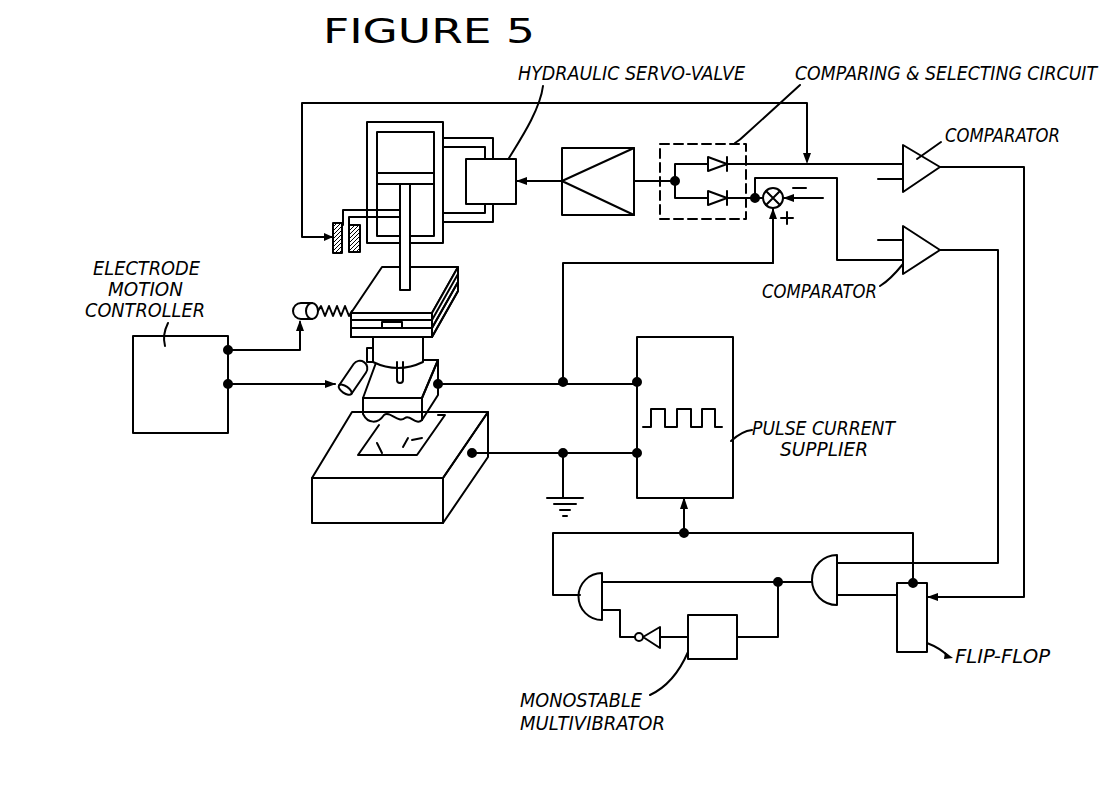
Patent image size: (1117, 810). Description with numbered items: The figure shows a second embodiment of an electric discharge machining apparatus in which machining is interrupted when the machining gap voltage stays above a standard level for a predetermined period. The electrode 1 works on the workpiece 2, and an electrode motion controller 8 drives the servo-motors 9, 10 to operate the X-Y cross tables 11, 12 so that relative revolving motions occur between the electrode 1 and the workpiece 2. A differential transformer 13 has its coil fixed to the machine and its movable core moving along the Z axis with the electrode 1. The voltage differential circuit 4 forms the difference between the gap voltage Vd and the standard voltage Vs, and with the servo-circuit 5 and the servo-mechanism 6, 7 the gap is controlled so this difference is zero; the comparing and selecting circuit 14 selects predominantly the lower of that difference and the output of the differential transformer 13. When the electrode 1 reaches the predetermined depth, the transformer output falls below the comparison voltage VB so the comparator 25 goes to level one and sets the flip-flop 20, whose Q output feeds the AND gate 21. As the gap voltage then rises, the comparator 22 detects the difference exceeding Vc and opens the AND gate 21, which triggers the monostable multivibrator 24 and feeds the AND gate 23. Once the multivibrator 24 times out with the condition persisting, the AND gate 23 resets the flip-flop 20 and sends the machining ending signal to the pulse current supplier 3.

The electrode 1 is at (441, 375).
The workpiece 2 is at (477, 440).
The pulse current supplier 3 is at (715, 378).
The voltage differential circuit 4 is at (762, 208).
The machining gap servo-circuit 5 is at (590, 157).
The machining gap servo-mechanism 6 is at (502, 158).
The machining gap servo-mechanism 7 is at (402, 148).
The electrode motion controller 8 is at (175, 411).
The servo-motor 9 is at (302, 303).
The servo-motor 10 is at (338, 398).
The X-Y cross table 11 is at (462, 282).
The X-Y cross table 12 is at (458, 303).
The differential transformer 13 is at (333, 224).
The comparing and selecting circuit 14 is at (670, 208).
The flip-flop 20 is at (910, 637).
The AND gate 21 is at (827, 593).
The comparator 22 is at (922, 266).
The AND gate 23 is at (593, 598).
The monostable multivibrator 24 is at (706, 650).
The comparator 25 is at (922, 183).